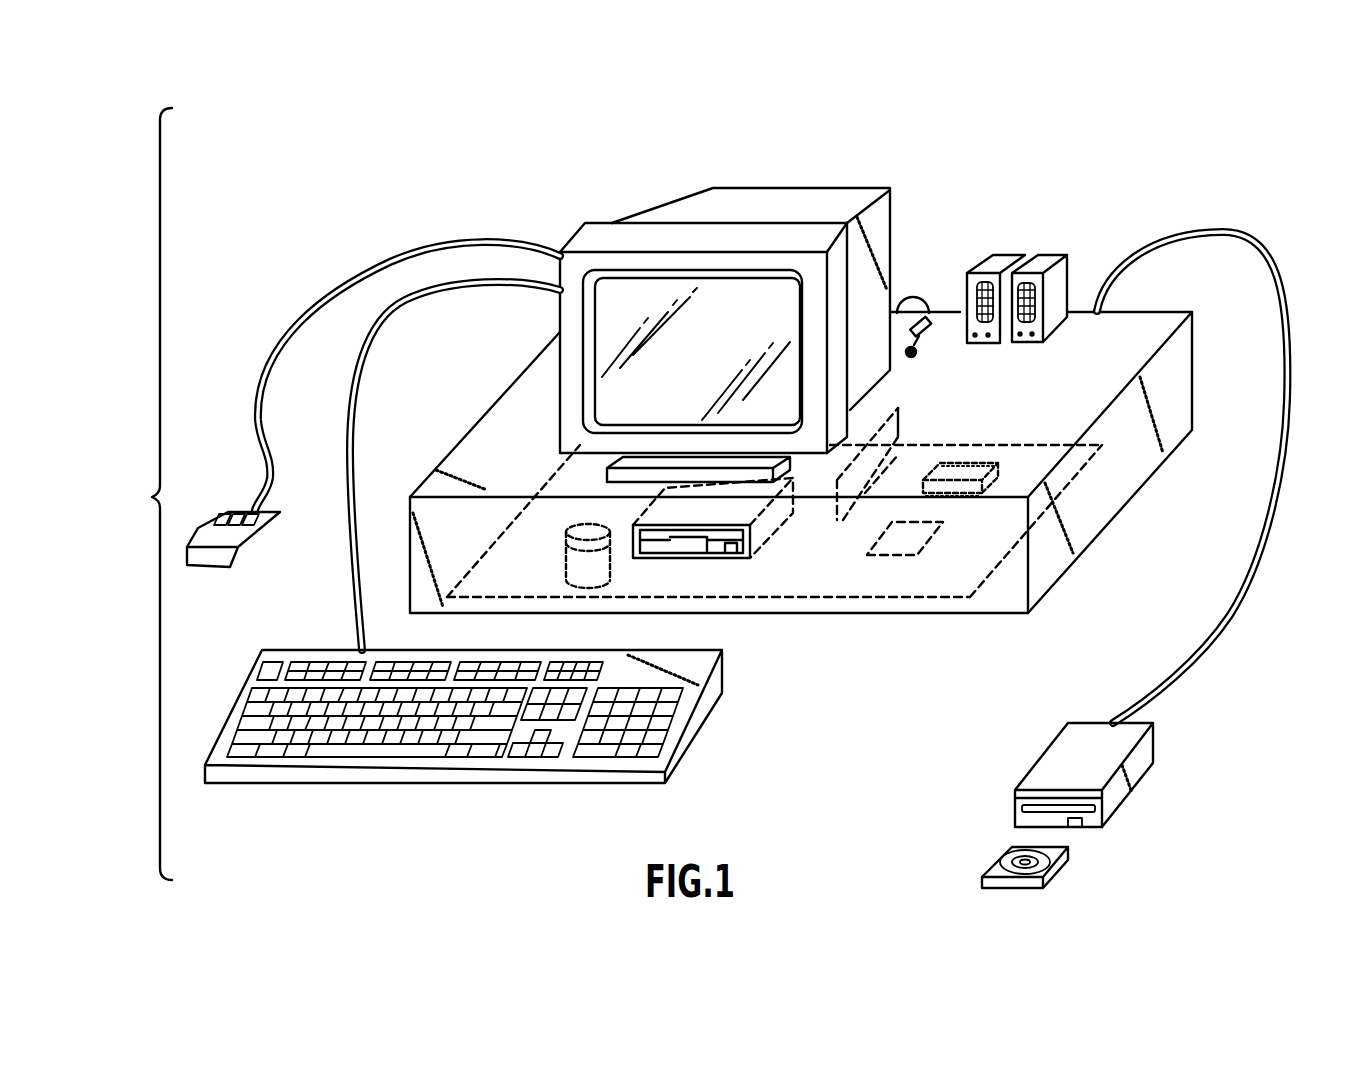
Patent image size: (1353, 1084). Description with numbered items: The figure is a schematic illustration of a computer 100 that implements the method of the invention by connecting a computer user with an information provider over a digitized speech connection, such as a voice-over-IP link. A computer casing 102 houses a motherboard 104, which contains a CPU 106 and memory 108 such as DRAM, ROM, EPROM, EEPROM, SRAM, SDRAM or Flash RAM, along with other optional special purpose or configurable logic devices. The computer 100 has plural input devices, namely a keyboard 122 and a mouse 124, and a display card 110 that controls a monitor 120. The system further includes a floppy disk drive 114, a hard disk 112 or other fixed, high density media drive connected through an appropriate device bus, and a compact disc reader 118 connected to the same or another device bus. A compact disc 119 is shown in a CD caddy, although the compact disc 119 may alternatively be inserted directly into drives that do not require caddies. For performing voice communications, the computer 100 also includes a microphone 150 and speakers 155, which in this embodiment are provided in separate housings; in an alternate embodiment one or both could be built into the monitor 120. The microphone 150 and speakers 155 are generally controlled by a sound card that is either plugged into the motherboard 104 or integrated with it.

The computer 100 is at (134, 494).
The computer casing 102 is at (1180, 361).
The motherboard 104 is at (1040, 457).
The CPU 106 is at (937, 530).
The memory 108 is at (962, 458).
The display card 110 is at (902, 420).
The hard disk 112 is at (567, 560).
The floppy disk drive 114 is at (745, 552).
The compact disc reader 118 is at (1067, 740).
The compact disc 119 is at (1055, 857).
The monitor 120 is at (795, 207).
The keyboard 122 is at (713, 697).
The mouse 124 is at (255, 538).
The microphone 150 is at (935, 310).
The speakers 155 is at (992, 240).